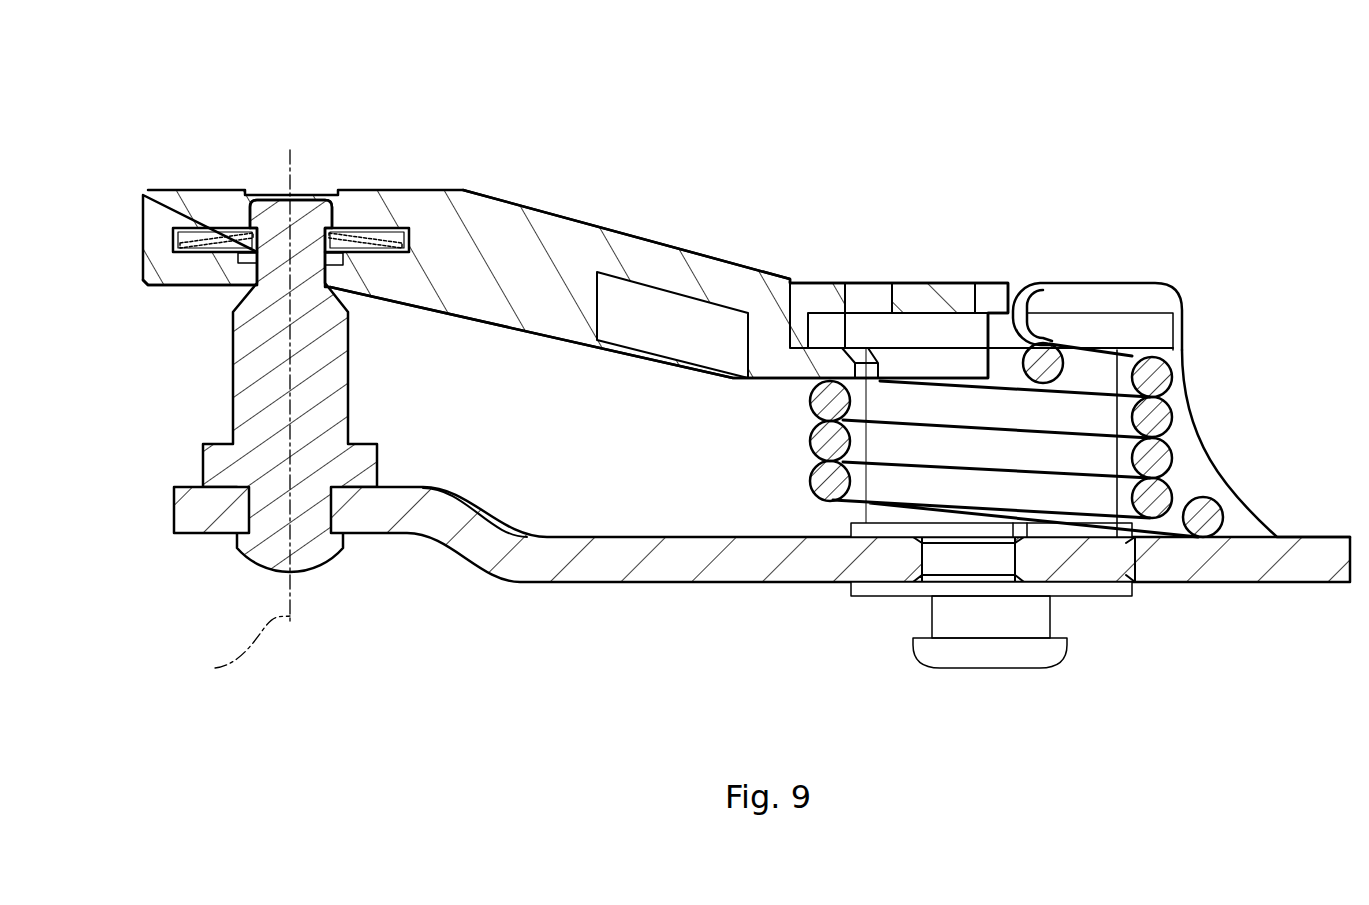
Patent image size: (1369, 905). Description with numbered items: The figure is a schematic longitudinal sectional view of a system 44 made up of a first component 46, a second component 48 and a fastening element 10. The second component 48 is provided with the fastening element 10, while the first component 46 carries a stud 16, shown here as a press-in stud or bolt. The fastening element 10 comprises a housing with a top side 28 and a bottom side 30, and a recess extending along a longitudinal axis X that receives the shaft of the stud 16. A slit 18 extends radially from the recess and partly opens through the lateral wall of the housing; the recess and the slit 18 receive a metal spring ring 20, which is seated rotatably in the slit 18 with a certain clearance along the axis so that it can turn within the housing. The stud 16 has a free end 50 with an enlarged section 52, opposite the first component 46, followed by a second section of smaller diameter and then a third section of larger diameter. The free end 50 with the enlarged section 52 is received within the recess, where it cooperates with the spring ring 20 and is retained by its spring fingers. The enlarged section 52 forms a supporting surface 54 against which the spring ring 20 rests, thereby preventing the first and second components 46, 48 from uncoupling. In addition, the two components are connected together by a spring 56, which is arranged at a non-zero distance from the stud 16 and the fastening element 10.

The fastening element 10 is at (707, 368).
The stud 16 is at (348, 378).
The slit 18 is at (211, 235).
The spring ring 20 is at (203, 253).
The top side 28 is at (163, 188).
The bottom side 30 is at (165, 287).
The system 44 is at (1223, 226).
The first component 46 is at (568, 566).
The second component 48 is at (540, 225).
The pin head 50 is at (265, 197).
The enlarged section 52 is at (313, 197).
The supporting surface 54 is at (372, 229).
The spring 56 is at (813, 441).